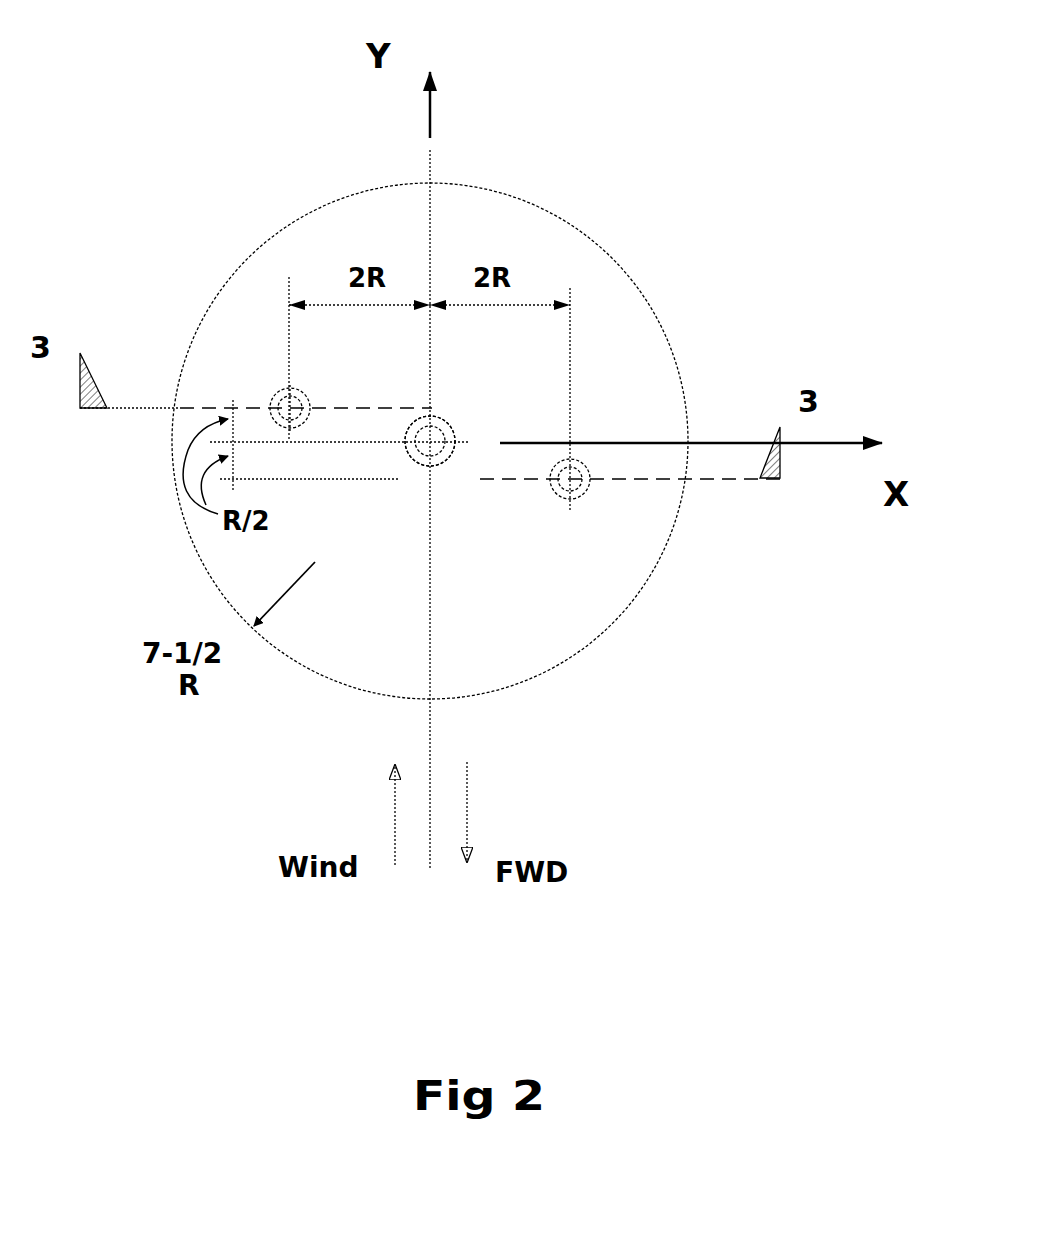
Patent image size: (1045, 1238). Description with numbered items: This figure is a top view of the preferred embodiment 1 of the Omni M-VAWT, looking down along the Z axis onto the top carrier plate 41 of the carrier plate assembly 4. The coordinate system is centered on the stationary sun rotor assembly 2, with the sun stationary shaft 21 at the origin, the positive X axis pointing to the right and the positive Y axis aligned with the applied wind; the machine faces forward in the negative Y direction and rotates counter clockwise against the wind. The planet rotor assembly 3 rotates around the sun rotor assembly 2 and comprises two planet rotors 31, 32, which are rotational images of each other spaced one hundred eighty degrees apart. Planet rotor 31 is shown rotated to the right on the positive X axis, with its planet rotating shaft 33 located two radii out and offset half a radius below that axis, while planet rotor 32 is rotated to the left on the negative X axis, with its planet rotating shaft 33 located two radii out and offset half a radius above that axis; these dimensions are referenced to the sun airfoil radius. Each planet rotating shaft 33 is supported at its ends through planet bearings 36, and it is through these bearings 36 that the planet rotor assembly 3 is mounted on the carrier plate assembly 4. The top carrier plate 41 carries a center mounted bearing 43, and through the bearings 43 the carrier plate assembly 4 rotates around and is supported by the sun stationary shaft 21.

The preferred embodiment 1 is at (848, 179).
The sun rotor assembly 2 is at (836, 279).
The planet rotor assembly 3 is at (911, 289).
The carrier plate assembly 4 is at (911, 324).
The sun stationary shaft 21 is at (430, 441).
The planet rotor 31 is at (570, 479).
The planet rotor 32 is at (290, 408).
The planet rotating shaft 33 is at (406, 452).
The planet bearing 36 is at (406, 452).
The top carrier plate 41 is at (583, 228).
The center mounted bearing 43 is at (505, 611).